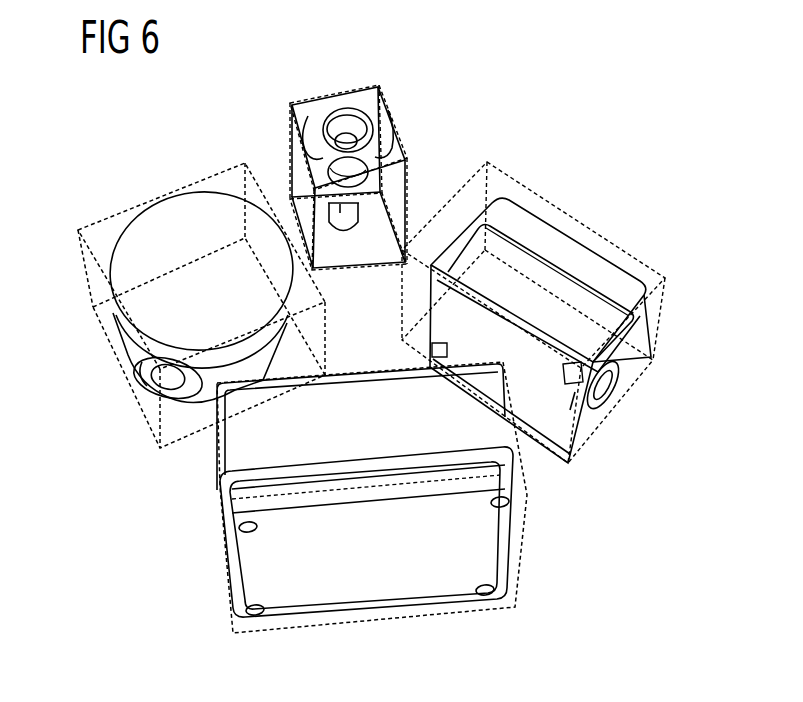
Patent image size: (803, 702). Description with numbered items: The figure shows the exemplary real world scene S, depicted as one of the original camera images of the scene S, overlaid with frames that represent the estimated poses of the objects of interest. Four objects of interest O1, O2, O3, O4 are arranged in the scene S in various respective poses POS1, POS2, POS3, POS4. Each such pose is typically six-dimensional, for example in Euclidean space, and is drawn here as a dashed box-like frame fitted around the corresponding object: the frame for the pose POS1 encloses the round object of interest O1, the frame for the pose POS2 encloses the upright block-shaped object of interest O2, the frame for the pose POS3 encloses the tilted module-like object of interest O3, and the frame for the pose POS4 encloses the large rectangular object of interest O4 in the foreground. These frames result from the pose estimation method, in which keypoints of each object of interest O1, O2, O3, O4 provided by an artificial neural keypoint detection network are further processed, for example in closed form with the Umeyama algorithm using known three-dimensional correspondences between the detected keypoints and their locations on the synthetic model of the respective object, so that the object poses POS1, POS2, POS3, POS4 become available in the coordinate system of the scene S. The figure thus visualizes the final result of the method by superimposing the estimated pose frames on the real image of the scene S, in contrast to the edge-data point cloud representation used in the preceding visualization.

The real world scene S is at (587, 113).
The pose POS1 is at (125, 207).
The object of interest O1 is at (208, 192).
The pose POS2 is at (296, 103).
The object of interest O2 is at (348, 98).
The pose POS3 is at (618, 243).
The object of interest O3 is at (504, 193).
The pose POS4 is at (527, 482).
The object of interest O4 is at (347, 376).